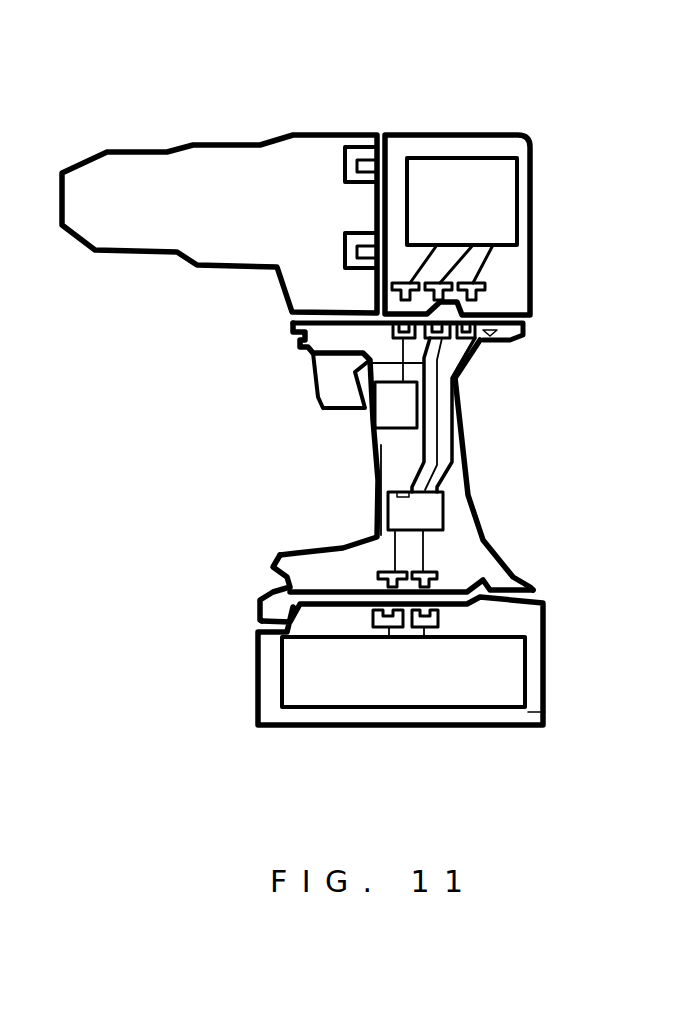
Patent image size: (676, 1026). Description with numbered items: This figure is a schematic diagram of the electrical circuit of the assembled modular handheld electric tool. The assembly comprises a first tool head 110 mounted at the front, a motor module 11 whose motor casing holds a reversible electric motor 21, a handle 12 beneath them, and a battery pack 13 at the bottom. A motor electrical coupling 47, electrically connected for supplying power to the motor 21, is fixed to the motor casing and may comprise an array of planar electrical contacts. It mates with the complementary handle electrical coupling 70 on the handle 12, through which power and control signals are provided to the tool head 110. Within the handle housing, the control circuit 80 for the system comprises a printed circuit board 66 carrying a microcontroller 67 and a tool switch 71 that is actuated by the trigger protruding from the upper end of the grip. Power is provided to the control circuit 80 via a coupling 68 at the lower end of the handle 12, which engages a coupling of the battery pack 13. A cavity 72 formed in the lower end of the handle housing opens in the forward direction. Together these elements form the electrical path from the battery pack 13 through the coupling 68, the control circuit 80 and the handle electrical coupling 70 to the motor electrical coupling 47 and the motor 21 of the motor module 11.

The first tool head 110 is at (229, 160).
The motor module 11 is at (512, 266).
The reversible electric motor 21 is at (477, 178).
The motor electrical coupling 47 is at (506, 292).
The handle electrical coupling 70 is at (498, 351).
The handle 12 is at (452, 472).
The microcontroller 67 is at (417, 420).
The control circuit 80 is at (390, 452).
The printed circuit board 66 is at (443, 510).
The tool switch 71 is at (403, 486).
The coupling 68 is at (458, 568).
The cavity 72 is at (273, 577).
The battery pack 13 is at (547, 720).